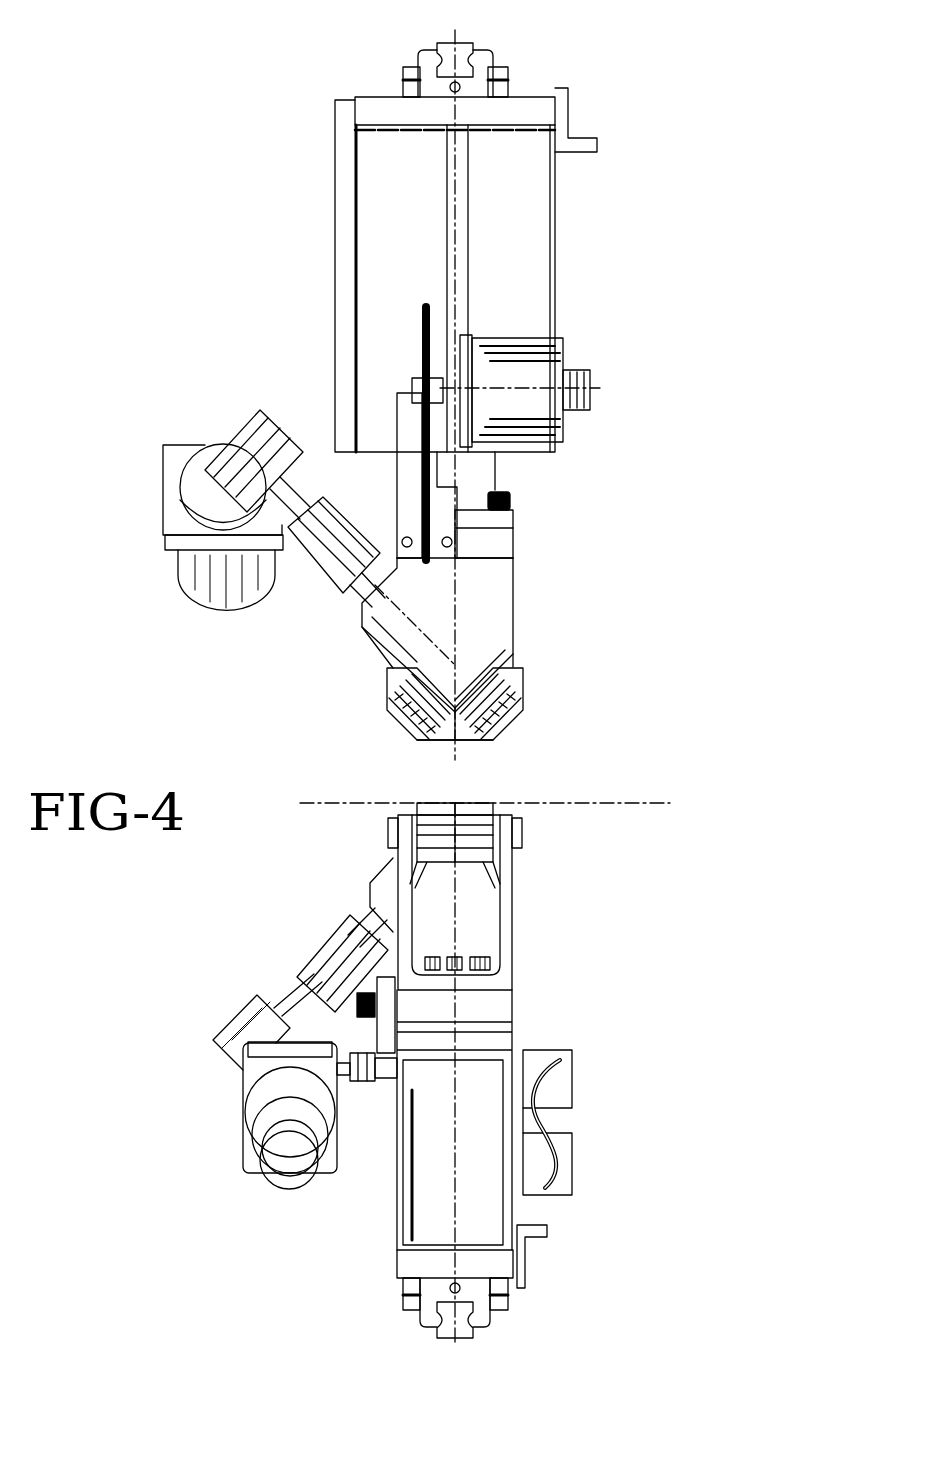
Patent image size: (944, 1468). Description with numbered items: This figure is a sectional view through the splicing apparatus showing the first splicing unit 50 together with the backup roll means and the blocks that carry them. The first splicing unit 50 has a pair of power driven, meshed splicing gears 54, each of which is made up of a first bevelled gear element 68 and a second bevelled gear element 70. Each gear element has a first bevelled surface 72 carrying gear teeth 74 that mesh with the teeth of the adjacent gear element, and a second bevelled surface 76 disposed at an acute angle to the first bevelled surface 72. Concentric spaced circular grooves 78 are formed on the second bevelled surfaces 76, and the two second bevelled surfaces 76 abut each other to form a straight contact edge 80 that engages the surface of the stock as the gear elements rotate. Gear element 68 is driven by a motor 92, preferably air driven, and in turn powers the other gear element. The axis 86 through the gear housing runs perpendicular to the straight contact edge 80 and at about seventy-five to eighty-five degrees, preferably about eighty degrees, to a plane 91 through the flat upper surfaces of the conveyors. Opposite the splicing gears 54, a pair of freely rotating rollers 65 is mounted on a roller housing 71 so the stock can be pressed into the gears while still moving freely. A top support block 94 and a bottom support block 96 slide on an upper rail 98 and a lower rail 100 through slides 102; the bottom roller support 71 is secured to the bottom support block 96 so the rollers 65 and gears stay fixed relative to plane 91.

The first splicing unit 50 is at (468, 674).
The splicing gears 54 is at (453, 729).
The rollers 65 is at (480, 838).
The first bevelled gear element 68 is at (522, 678).
The second bevelled gear element 70 is at (400, 672).
The roller housing 71 is at (506, 942).
The first bevelled surface 72 is at (500, 665).
The gear teeth 74 is at (467, 668).
The second bevelled surface 76 is at (388, 702).
The concentric spaced circular grooves 78 is at (393, 722).
The straight contact edge 80 is at (432, 742).
The axis 86 is at (457, 582).
The plane 91 is at (657, 808).
The motor 92 is at (277, 455).
The top support block 94 is at (590, 286).
The bottom support block 96 is at (600, 1143).
The upper rail 98 is at (445, 44).
The lower rail 100 is at (445, 1330).
The slides 102 is at (478, 52).